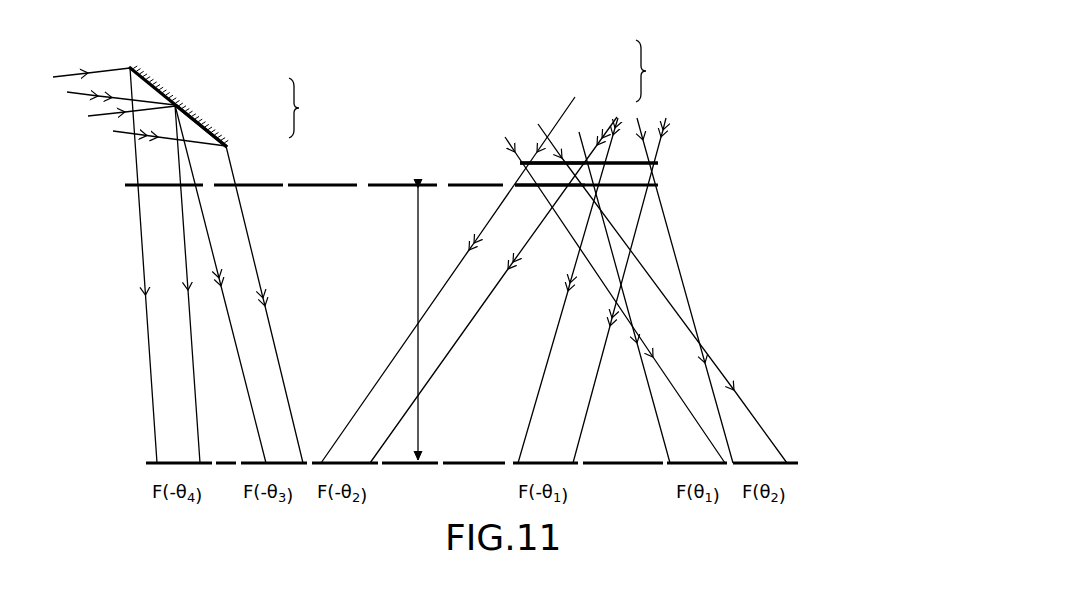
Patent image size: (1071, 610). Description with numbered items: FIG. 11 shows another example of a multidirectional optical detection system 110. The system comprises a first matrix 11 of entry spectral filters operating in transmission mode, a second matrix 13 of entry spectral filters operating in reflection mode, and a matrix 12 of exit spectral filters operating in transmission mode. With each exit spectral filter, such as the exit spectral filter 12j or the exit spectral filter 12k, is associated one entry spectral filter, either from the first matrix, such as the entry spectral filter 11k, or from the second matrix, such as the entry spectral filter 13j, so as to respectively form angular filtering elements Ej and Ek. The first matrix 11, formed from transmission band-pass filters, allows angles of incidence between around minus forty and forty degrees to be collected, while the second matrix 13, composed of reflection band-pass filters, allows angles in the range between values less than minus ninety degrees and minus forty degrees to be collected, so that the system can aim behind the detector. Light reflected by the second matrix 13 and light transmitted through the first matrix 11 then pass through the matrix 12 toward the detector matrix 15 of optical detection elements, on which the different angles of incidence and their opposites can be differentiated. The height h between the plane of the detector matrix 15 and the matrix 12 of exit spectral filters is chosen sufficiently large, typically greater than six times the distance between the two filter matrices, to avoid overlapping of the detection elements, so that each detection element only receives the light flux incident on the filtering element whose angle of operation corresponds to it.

The second matrix of entry spectral filters 13 is at (174, 85).
The entry spectral filter 13j is at (220, 129).
The exit spectral filter 12j is at (250, 184).
The angular filtering element Ej is at (309, 108).
The first matrix of entry spectral filters 11 is at (660, 163).
The matrix of exit spectral filters 12 is at (660, 185).
The entry spectral filter 11k is at (548, 162).
The exit spectral filter 12k is at (579, 134).
The angular filtering element Ek is at (657, 71).
The multidirectional optical detection system 110 is at (732, 113).
The detector matrix 15 is at (792, 463).
The height h is at (405, 324).